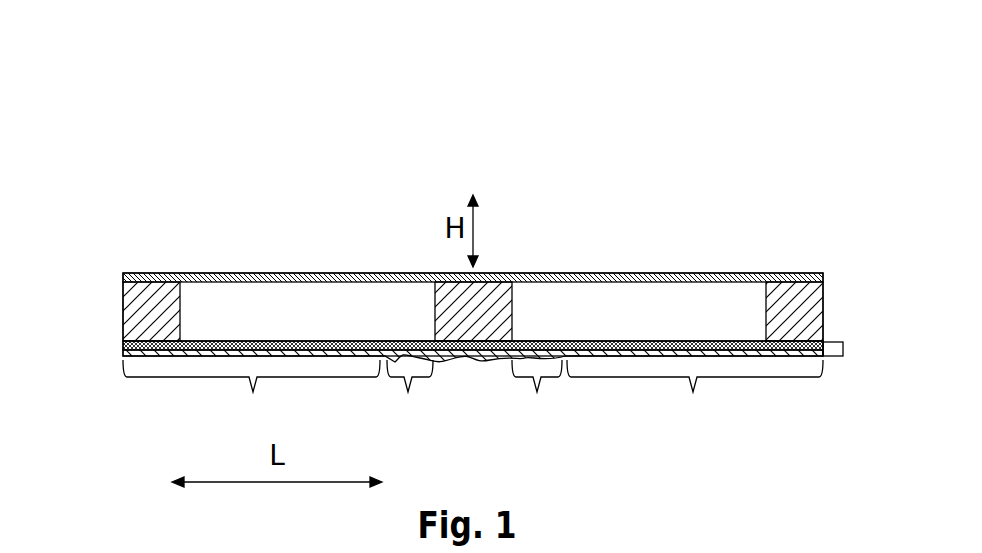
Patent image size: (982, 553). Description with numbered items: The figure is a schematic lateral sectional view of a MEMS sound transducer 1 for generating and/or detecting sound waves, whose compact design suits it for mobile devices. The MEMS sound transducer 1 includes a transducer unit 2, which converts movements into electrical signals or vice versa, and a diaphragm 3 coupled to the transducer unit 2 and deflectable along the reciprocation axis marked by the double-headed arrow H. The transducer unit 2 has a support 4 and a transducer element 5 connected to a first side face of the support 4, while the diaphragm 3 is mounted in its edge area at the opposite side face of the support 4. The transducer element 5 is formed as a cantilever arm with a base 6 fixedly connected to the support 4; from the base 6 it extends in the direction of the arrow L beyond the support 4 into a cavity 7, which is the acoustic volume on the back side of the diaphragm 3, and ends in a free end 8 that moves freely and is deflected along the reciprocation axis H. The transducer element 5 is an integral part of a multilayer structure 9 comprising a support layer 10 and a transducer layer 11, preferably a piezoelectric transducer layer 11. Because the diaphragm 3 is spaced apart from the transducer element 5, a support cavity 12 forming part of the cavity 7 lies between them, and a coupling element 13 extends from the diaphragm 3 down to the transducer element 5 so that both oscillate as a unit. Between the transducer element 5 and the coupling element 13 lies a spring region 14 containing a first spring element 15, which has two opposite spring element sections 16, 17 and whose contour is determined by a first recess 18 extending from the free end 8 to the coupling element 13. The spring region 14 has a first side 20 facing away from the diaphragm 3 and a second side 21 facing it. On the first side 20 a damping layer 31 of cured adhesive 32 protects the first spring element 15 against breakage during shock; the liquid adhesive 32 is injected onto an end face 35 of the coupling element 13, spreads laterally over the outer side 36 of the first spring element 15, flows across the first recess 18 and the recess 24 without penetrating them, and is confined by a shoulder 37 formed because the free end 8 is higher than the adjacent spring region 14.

The MEMS sound transducer 1 is at (165, 95).
The transducer unit 2 is at (122, 308).
The diaphragm 3 is at (150, 273).
The support 4 is at (132, 325).
The transducer element 5 is at (473, 396).
The base 6 is at (828, 340).
The cavity 7 is at (735, 305).
The free end 8 is at (605, 341).
The multilayer structure 9 is at (845, 348).
The support layer 10 is at (690, 341).
The transducer layer 11 is at (648, 341).
The support cavity 12 is at (313, 327).
The coupling element 13 is at (495, 290).
The spring region 14 is at (474, 396).
The first spring element 15 is at (396, 341).
The spring element section 16 is at (392, 341).
The spring element section 17 is at (412, 341).
The first recess 18 is at (403, 341).
The first side 20 is at (438, 357).
The second side 21 is at (388, 340).
The recess 24 is at (387, 341).
The damping layer 31 is at (530, 341).
The adhesive 32 is at (480, 354).
The end face 35 is at (490, 351).
The outer side 36 is at (545, 341).
The shoulder 37 is at (562, 353).